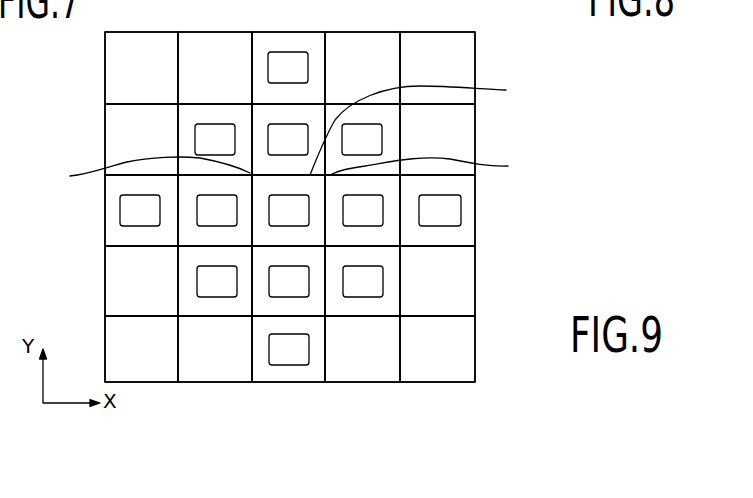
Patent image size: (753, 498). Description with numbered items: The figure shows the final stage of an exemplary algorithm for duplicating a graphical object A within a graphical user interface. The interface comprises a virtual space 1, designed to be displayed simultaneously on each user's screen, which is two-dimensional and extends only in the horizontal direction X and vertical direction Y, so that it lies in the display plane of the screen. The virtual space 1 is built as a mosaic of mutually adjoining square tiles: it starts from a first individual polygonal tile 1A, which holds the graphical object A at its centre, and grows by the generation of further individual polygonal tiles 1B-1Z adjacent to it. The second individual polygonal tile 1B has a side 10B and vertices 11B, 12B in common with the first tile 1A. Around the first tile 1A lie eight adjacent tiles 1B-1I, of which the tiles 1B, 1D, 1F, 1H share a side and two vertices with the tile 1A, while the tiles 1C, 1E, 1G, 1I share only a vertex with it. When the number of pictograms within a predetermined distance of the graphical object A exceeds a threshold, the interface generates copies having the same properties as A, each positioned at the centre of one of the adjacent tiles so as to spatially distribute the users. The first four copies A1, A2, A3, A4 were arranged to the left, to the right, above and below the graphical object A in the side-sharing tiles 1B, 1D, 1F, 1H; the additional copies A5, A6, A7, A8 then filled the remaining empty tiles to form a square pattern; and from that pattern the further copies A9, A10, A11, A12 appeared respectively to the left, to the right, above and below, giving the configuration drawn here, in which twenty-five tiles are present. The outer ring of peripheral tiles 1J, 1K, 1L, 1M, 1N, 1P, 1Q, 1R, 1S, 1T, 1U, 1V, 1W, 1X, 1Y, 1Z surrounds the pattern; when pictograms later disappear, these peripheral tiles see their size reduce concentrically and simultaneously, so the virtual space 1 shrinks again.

The virtual space 1 is at (449, 68).
The first individual polygonal tile 1A is at (313, 228).
The second individual polygonal tile 1B is at (262, 118).
The adjacent tile 1C is at (198, 167).
The adjacent tile 1D is at (192, 236).
The adjacent tile 1E is at (195, 305).
The adjacent tile 1F is at (272, 303).
The adjacent tile 1G is at (385, 300).
The adjacent tile 1H is at (386, 190).
The adjacent tile 1I is at (390, 127).
The peripheral tile 1J is at (361, 53).
The peripheral tile 1K is at (291, 45).
The peripheral tile 1L is at (217, 60).
The peripheral tile 1M is at (130, 58).
The peripheral tile 1N is at (125, 138).
The peripheral tile 1P is at (118, 233).
The peripheral tile 1Q is at (128, 283).
The peripheral tile 1R is at (127, 340).
The peripheral tile 1S is at (225, 353).
The peripheral tile 1T is at (288, 367).
The peripheral tile 1U is at (372, 343).
The peripheral tile 1V is at (445, 350).
The peripheral tile 1W is at (452, 264).
The peripheral tile 1X is at (462, 232).
The peripheral tile 1Y is at (456, 137).
The peripheral tile 1Z is at (437, 55).
The side 10B is at (428, 126).
The vertex 11B is at (138, 172).
The vertex 12B is at (440, 170).
The graphical object A is at (289, 210).
The copy of the graphical object A1 is at (217, 210).
The copy of the graphical object A2 is at (363, 210).
The copy of the graphical object A3 is at (288, 139).
The copy of the graphical object A4 is at (289, 281).
The additional copy of the graphical object A5 is at (215, 139).
The additional copy of the graphical object A6 is at (363, 281).
The additional copy of the graphical object A7 is at (362, 139).
The additional copy of the graphical object A8 is at (217, 281).
The additional copy of the graphical object A9 is at (140, 210).
The additional copy of the graphical object A10 is at (440, 210).
The additional copy of the graphical object A11 is at (288, 67).
The additional copy of the graphical object A12 is at (289, 349).